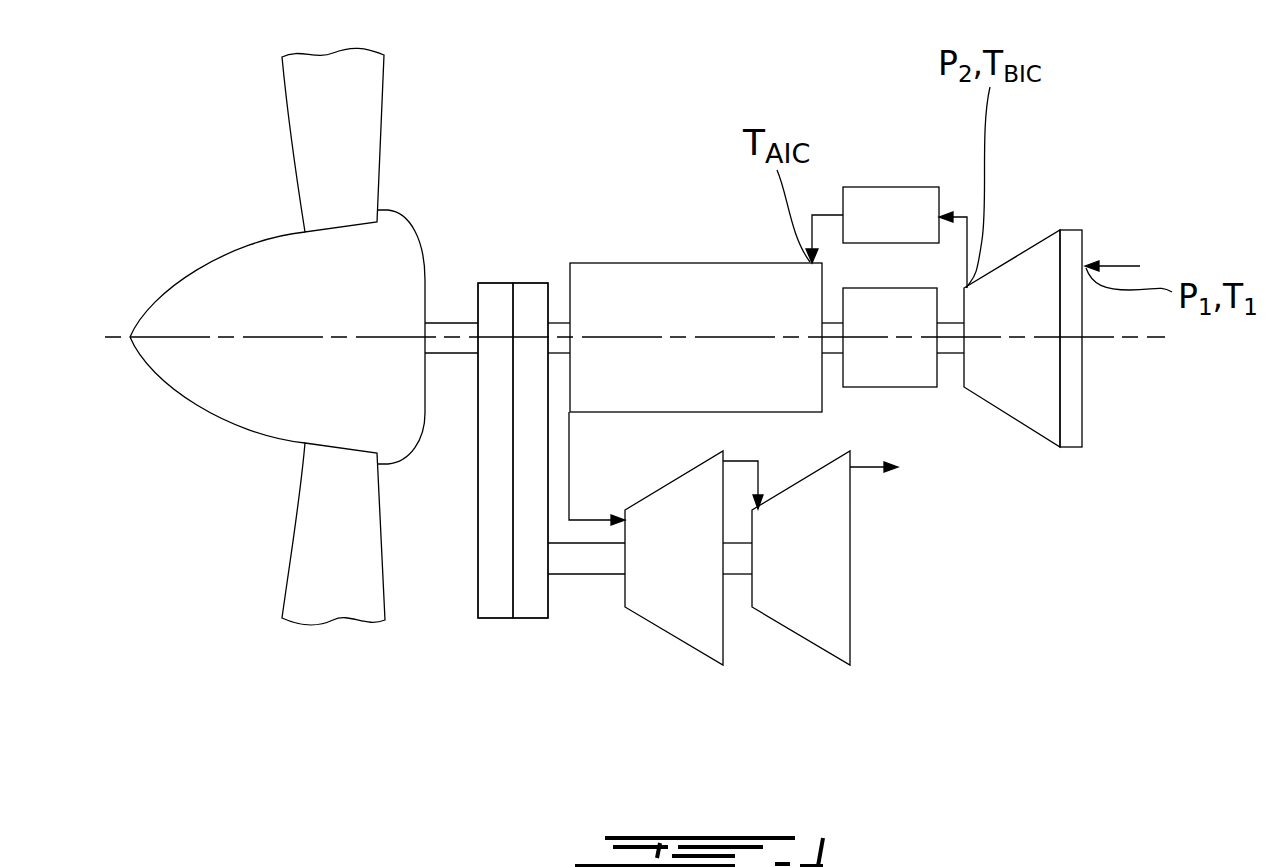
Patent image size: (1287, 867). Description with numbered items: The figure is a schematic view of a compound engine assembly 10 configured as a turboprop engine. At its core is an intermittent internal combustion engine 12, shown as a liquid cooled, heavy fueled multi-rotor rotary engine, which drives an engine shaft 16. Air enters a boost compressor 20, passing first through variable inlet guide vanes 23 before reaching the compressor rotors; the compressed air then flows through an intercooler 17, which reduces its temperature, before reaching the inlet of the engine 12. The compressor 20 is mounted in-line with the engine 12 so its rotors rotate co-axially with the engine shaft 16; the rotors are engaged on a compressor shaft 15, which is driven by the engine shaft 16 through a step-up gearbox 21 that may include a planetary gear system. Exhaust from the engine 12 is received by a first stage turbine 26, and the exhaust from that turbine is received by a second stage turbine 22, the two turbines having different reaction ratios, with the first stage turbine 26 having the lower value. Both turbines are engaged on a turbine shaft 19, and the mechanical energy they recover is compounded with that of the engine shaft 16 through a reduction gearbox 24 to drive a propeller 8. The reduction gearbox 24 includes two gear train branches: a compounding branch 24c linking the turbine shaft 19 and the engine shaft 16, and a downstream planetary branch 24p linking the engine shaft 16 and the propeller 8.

The propeller 8 is at (363, 87).
The compound engine assembly 10 is at (837, 146).
The intermittent internal combustion engine 12 is at (695, 287).
The compressor shaft 15 is at (950, 343).
The engine shaft 16 is at (557, 325).
The intercooler 17 is at (897, 198).
The turbine shaft 19 is at (585, 560).
The boost compressor 20 is at (1034, 226).
The step-up gearbox 21 is at (918, 388).
The second stage turbine 22 is at (863, 675).
The variable inlet guide vanes 23 is at (1075, 238).
The reduction gearbox 24 is at (498, 283).
The downstream planetary branch 24p is at (498, 605).
The compounding branch 24c is at (535, 605).
The first stage turbine 26 is at (652, 648).